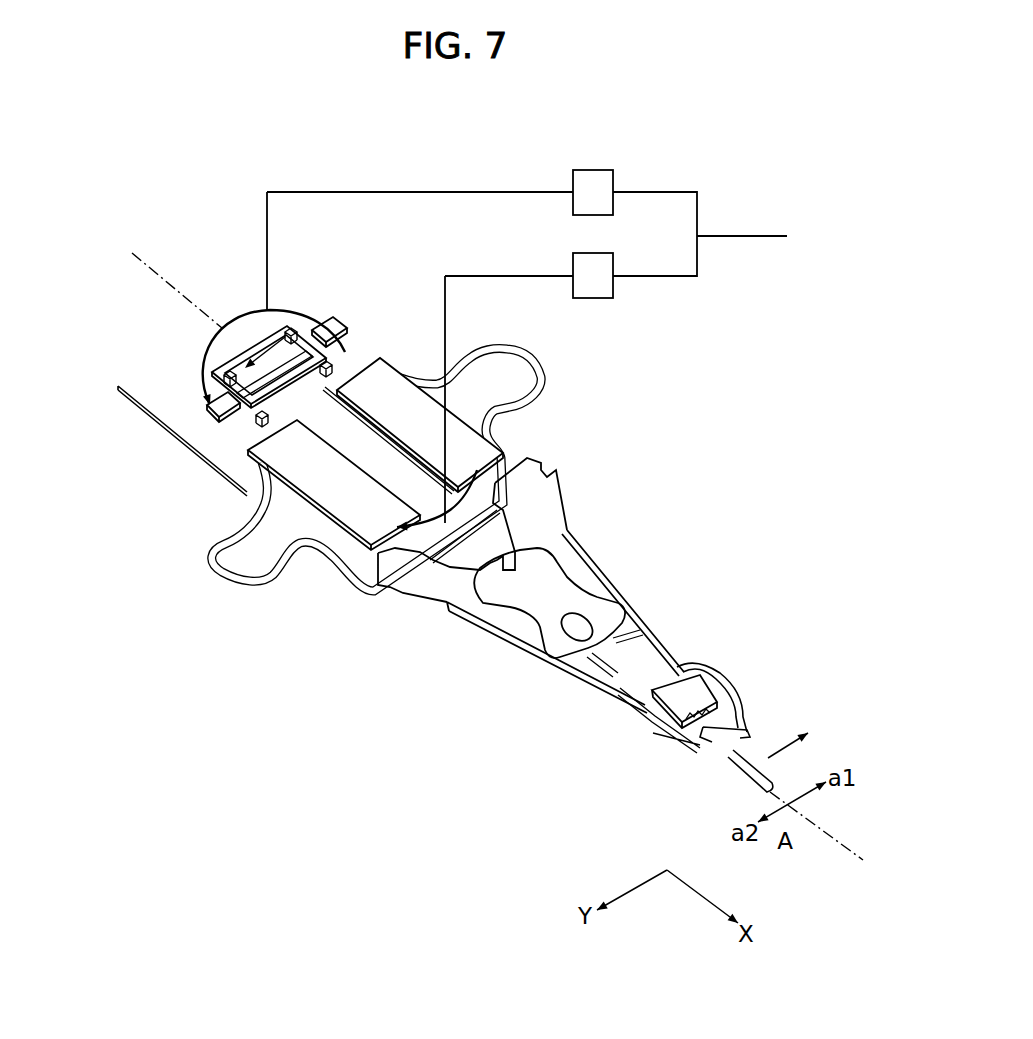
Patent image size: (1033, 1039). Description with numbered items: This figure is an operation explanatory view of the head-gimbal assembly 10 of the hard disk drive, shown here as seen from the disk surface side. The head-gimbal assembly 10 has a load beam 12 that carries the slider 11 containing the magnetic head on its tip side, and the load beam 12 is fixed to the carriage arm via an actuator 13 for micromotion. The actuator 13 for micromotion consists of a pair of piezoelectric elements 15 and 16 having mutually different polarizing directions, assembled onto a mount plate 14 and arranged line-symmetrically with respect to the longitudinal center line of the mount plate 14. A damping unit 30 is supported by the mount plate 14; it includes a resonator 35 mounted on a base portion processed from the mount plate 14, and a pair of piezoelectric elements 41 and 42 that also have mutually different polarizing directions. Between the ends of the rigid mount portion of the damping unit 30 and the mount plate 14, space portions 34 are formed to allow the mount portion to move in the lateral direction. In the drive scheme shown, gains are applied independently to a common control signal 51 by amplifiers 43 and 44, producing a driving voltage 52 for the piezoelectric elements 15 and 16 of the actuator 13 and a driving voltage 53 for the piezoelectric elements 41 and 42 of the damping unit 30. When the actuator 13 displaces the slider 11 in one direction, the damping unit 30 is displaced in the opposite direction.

The head-gimbal assembly 10 is at (84, 235).
The slider 11 is at (673, 703).
The load beam 12 is at (525, 632).
The actuator for micromotion 13 is at (100, 654).
The mount plate 14 is at (233, 463).
The piezoelectric element 15 is at (404, 420).
The piezoelectric element 16 is at (310, 488).
The damping unit 30 is at (243, 432).
The space portion 34 is at (713, 696).
The resonator 35 is at (237, 375).
The piezoelectric element 41 is at (331, 328).
The piezoelectric element 42 is at (210, 398).
The amplifier 43 is at (610, 171).
The amplifier 44 is at (610, 254).
The control signal 51 is at (727, 236).
The driving voltage 52 is at (467, 276).
The driving voltage 53 is at (449, 192).